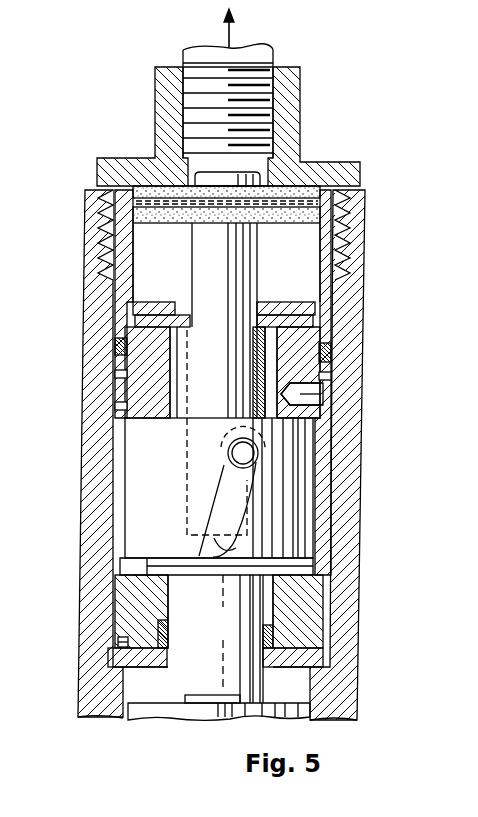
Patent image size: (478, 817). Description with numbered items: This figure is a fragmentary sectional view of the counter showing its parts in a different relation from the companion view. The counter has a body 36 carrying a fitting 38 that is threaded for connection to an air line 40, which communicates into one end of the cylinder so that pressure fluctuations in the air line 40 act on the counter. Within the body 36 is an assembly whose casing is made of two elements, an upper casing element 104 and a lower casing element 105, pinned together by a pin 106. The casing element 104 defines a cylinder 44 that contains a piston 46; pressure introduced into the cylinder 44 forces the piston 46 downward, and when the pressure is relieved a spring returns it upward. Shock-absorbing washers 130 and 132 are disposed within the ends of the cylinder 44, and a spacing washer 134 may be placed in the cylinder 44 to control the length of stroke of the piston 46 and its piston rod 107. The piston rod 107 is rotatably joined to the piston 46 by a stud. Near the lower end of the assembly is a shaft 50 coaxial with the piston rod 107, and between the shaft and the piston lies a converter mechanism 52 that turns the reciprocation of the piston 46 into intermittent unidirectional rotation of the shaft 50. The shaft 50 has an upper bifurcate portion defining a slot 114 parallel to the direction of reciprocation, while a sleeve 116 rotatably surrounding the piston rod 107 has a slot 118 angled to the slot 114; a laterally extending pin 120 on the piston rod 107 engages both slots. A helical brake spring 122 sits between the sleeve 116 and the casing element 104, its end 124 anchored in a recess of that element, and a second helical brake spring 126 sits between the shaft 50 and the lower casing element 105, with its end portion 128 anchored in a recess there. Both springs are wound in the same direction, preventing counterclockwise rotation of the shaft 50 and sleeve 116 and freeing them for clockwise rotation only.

The body 36 is at (87, 528).
The fitting 38 is at (292, 127).
The air line 40 is at (275, 59).
The cylinder 44 is at (131, 260).
The piston 46 is at (297, 227).
The shaft 50 is at (236, 673).
The converter mechanism 52 is at (315, 497).
The casing element 104 is at (318, 337).
The lower casing element 105 is at (317, 600).
The pin 106 is at (322, 395).
The piston rod 107 is at (248, 282).
The slot 114 is at (187, 507).
The sleeve 116 is at (312, 458).
The slot 118 is at (243, 508).
The pin 120 is at (228, 455).
The helical brake spring 122 is at (177, 398).
The end 124 is at (128, 408).
The helical brake spring 126 is at (262, 630).
The end portion 128 is at (118, 642).
The shock-absorbing washer 130 is at (298, 190).
The shock-absorbing washer 132 is at (133, 322).
The spacing washer 134 is at (307, 308).